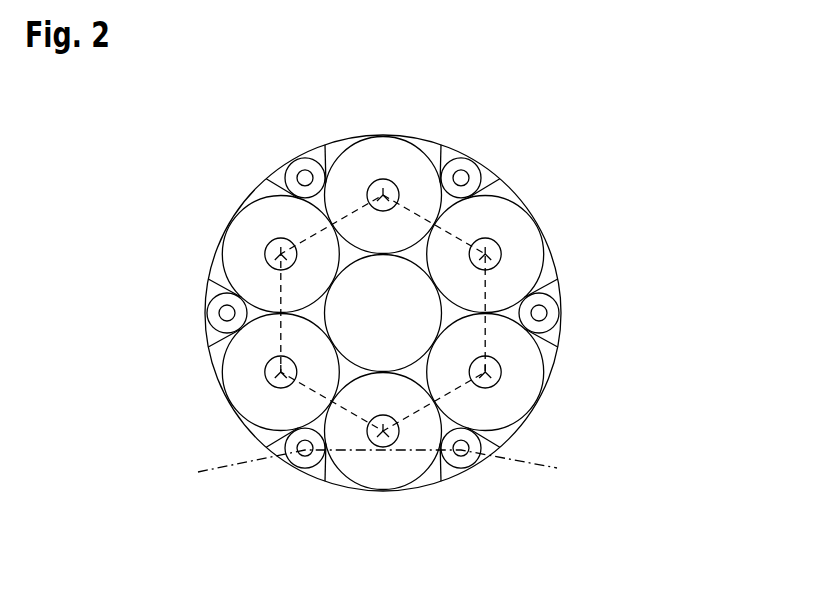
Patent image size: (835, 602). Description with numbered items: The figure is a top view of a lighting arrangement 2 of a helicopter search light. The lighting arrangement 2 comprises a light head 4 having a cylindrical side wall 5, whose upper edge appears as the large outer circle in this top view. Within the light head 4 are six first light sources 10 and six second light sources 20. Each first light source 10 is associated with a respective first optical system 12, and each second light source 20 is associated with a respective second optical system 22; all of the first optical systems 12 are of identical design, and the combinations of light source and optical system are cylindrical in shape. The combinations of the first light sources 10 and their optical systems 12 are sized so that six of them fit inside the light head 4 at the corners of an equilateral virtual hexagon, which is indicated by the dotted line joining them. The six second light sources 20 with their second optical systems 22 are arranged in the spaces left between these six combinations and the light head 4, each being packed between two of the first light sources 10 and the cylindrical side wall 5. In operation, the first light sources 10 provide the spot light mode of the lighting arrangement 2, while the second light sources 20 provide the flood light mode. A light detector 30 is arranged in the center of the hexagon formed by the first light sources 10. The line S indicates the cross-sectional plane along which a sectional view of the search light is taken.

The lighting arrangement 2 is at (664, 228).
The light head 4 is at (200, 366).
The cylindrical side wall 5 is at (428, 141).
The first light source 10 is at (393, 178).
The first optical system 12 is at (362, 160).
The second light source 20 is at (470, 160).
The second optical system 22 is at (303, 168).
The light detector 30 is at (397, 330).
The line S is at (557, 468).